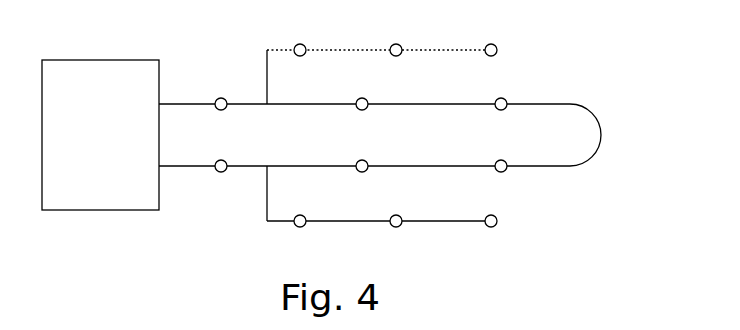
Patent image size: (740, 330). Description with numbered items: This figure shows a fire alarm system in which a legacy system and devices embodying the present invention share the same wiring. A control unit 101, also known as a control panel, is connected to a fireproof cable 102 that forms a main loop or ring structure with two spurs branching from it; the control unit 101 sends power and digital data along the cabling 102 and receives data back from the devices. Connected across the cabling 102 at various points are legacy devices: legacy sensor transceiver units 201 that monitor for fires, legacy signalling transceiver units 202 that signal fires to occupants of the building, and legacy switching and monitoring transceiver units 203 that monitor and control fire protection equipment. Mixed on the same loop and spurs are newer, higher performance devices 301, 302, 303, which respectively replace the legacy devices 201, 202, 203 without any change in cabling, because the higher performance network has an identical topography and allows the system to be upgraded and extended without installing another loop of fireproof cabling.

The control unit 101 is at (118, 142).
The fireproof cable 102 is at (590, 156).
The legacy sensor transceiver unit 201 is at (260, 176).
The legacy signalling transceiver unit 202 is at (379, 94).
The legacy switching and monitoring transceiver unit 203 is at (495, 176).
The high performance device 301 is at (495, 94).
The high performance device 302 is at (378, 176).
The high performance device 303 is at (261, 94).